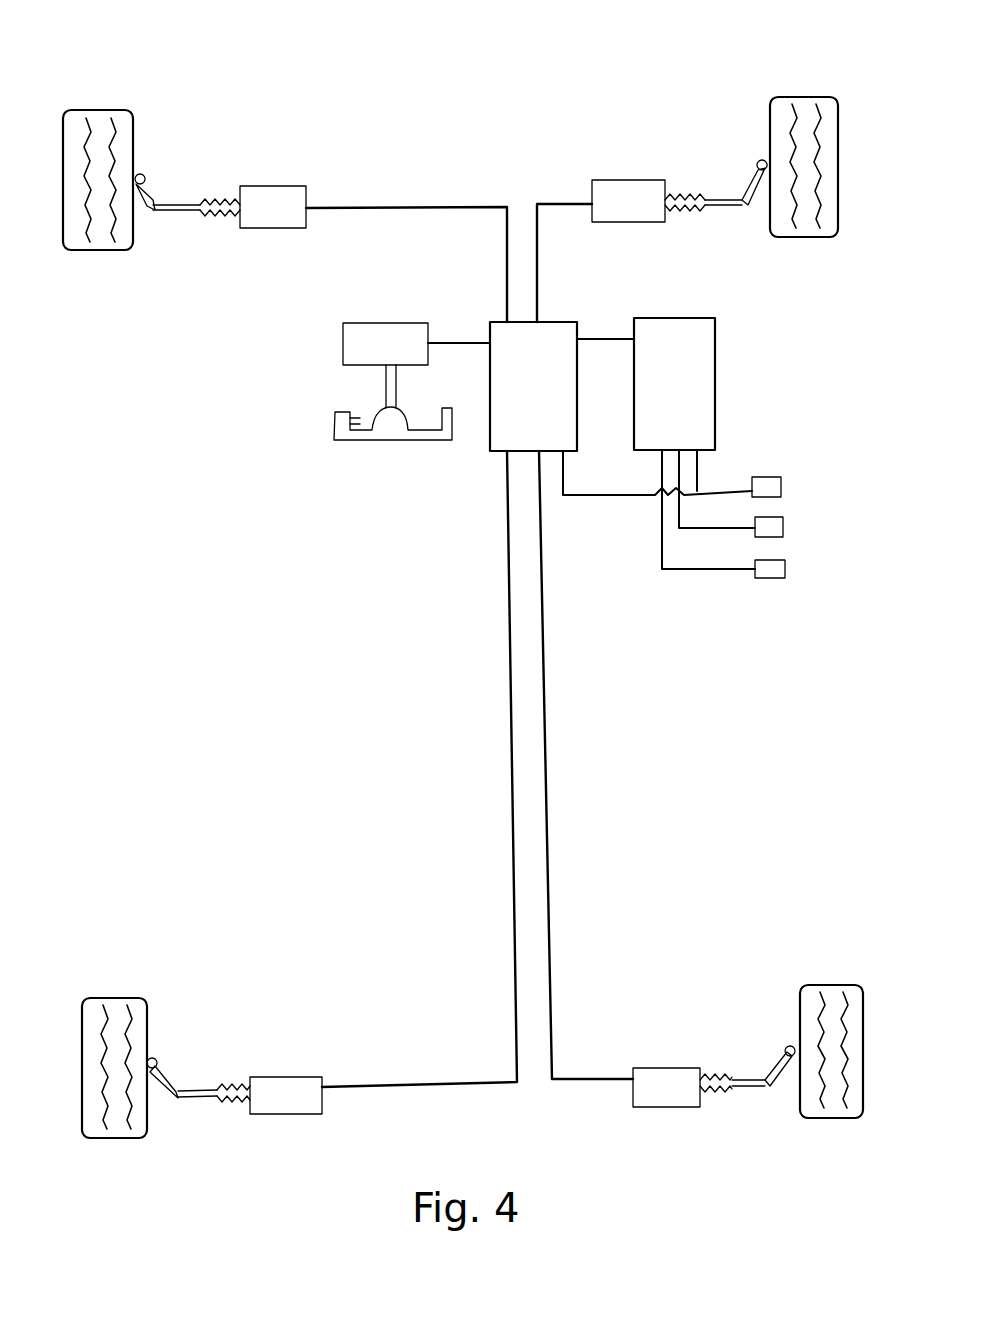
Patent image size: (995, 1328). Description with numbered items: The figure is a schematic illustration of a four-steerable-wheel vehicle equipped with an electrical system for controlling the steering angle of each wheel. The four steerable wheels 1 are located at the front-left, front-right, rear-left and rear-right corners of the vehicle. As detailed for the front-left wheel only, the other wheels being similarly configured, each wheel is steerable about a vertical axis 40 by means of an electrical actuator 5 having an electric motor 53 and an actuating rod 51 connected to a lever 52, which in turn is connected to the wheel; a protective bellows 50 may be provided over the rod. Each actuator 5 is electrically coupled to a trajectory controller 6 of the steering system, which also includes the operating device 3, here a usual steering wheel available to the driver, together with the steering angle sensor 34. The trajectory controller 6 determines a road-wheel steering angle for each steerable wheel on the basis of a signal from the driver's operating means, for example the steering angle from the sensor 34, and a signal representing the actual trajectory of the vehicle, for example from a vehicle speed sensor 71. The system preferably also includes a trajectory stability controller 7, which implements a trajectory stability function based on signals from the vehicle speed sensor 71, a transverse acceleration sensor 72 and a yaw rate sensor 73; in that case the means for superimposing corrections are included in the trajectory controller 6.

The steerable wheel 1 is at (98, 90).
The operating device 3 is at (376, 458).
The electrical actuator 5 is at (219, 195).
The trajectory controller 6 is at (545, 342).
The trajectory stability controller 7 is at (676, 340).
The steering angle sensor 34 is at (343, 347).
The vertical axis 40 is at (136, 170).
The protective bellows 50 is at (233, 216).
The actuating rod 51 is at (180, 205).
The lever 52 is at (140, 212).
The electric motor 53 is at (247, 162).
The vehicle speed sensor 71 is at (773, 477).
The transverse acceleration sensor 72 is at (780, 518).
The yaw rate sensor 73 is at (780, 560).